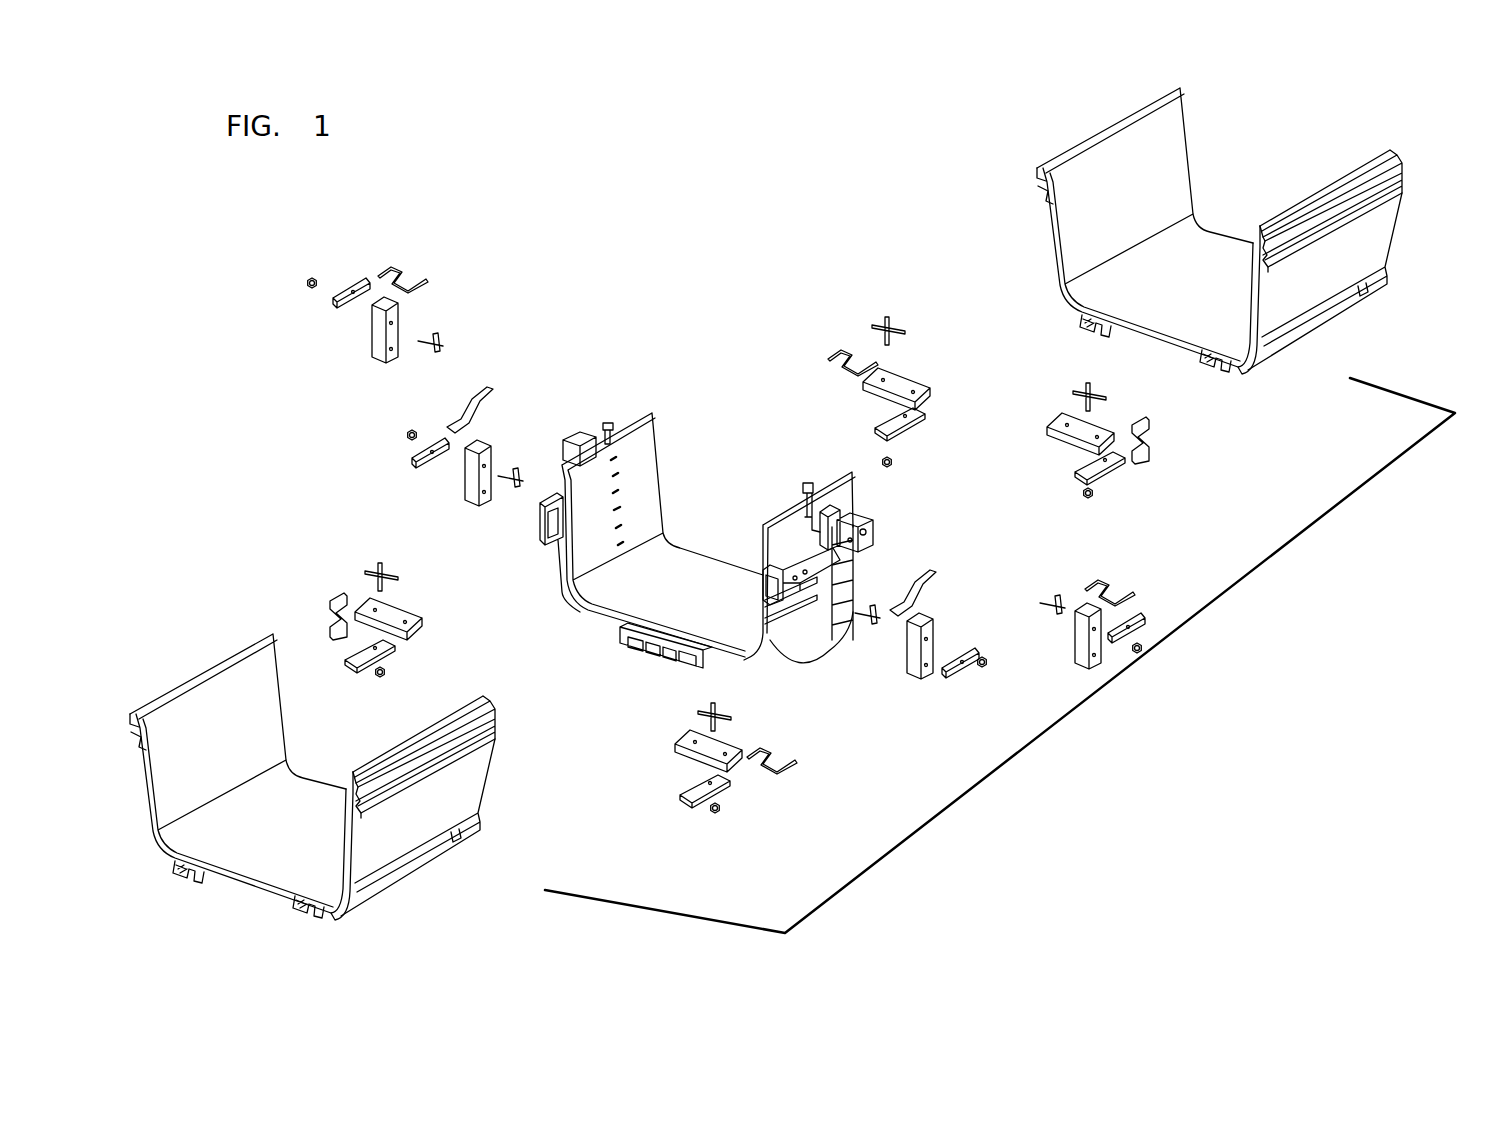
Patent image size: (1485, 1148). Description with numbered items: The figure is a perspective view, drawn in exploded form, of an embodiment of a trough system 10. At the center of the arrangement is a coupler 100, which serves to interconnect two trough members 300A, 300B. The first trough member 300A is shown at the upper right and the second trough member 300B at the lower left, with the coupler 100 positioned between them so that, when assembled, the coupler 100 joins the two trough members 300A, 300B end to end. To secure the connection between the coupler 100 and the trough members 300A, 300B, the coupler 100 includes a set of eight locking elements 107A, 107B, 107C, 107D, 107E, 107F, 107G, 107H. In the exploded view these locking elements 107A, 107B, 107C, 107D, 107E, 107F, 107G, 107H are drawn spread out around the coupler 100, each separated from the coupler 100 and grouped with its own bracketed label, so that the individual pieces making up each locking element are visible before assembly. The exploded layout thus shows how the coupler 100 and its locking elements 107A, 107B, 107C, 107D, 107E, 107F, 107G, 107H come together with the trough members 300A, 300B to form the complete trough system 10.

The trough system 10 is at (1167, 638).
The coupler 100 is at (713, 530).
The trough member 300A is at (1245, 140).
The trough member 300B is at (172, 660).
The locking element 107A is at (1043, 562).
The locking element 107B is at (847, 647).
The locking element 107C is at (695, 820).
The locking element 107D is at (333, 537).
The locking element 107E is at (913, 305).
The locking element 107F is at (1053, 352).
The locking element 107G is at (392, 470).
The locking element 107H is at (318, 223).